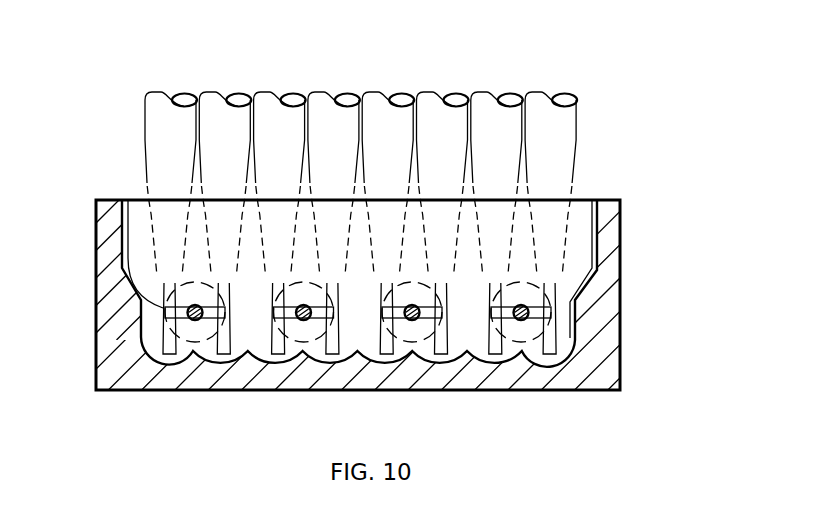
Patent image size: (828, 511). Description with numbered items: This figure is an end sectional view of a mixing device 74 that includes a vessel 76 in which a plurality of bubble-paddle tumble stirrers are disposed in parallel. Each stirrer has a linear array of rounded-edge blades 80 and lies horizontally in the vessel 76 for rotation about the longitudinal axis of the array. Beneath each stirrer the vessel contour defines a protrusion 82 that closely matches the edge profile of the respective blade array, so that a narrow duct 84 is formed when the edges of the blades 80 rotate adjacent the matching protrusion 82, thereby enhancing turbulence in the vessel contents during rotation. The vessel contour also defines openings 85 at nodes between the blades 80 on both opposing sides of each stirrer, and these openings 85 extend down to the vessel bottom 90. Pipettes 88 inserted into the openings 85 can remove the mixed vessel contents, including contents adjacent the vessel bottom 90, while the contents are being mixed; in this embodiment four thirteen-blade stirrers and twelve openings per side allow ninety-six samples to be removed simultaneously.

The mixing device 74 is at (623, 201).
The vessel 76 is at (623, 227).
The rounded-edge blades 80 is at (128, 200).
The protrusion 82 is at (192, 349).
The narrow duct 84 is at (163, 360).
The openings 85 is at (313, 353).
The pipettes 88 is at (317, 92).
The vessel bottom 90 is at (484, 356).